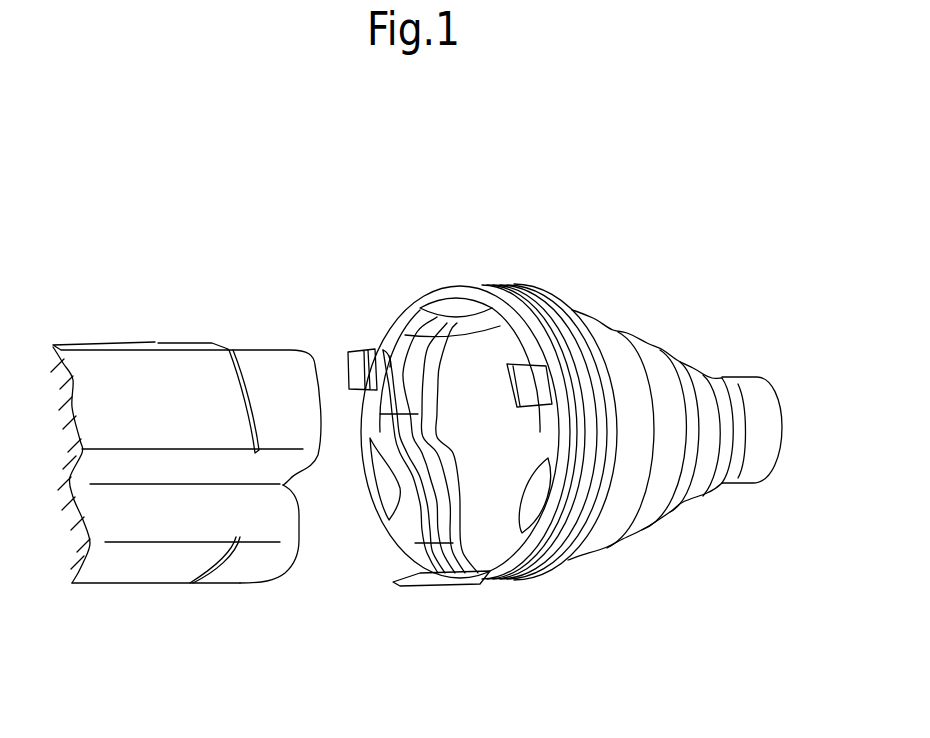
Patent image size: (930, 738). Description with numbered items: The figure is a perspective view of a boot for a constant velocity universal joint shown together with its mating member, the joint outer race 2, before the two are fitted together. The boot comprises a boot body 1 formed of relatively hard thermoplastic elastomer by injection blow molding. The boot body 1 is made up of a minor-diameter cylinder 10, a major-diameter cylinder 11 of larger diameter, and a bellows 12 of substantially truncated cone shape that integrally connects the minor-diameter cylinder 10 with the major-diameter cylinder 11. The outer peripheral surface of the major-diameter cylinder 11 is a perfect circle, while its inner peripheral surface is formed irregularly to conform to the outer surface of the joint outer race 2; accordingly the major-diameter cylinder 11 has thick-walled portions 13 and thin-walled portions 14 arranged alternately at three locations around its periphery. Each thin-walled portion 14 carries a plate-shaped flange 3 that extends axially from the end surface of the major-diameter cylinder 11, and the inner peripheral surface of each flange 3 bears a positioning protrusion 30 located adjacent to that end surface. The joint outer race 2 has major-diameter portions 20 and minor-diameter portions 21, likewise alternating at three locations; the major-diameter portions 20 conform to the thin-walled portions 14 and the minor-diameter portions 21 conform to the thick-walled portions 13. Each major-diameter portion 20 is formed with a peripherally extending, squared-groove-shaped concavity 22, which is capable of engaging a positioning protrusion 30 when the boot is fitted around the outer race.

The boot body 1 is at (680, 340).
The joint outer race 2 is at (108, 340).
The flange 3 is at (533, 383).
The minor-diameter cylinder 10 is at (761, 388).
The major-diameter cylinder 11 is at (526, 312).
The bellows 12 is at (645, 517).
The thick-walled portion 13 is at (451, 302).
The thin-walled portion 14 is at (384, 350).
The major-diameter portion 20 is at (268, 357).
The minor-diameter portion 21 is at (288, 487).
The concavity 22 is at (232, 348).
The positioning protrusion 30 is at (353, 367).